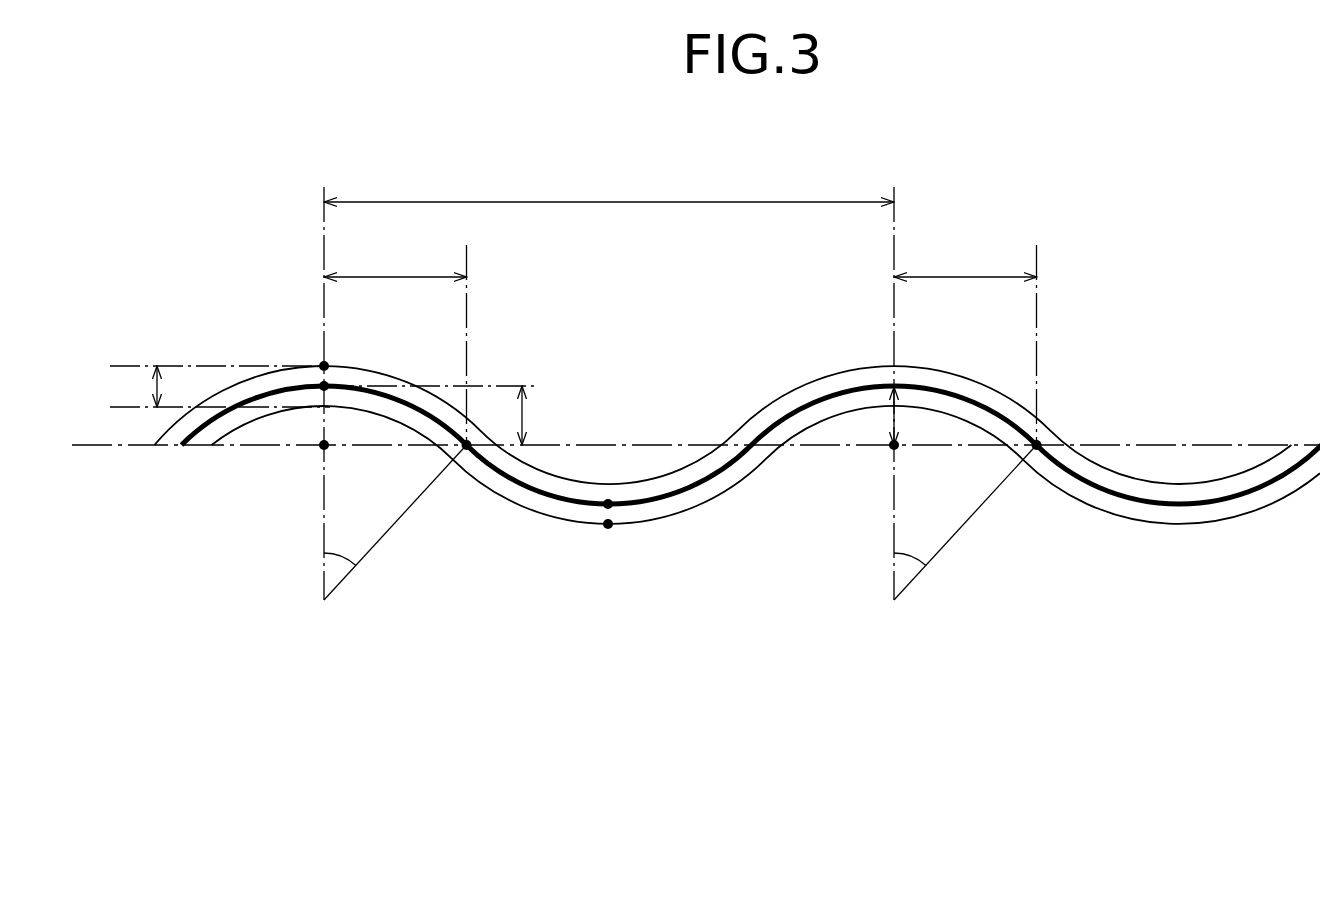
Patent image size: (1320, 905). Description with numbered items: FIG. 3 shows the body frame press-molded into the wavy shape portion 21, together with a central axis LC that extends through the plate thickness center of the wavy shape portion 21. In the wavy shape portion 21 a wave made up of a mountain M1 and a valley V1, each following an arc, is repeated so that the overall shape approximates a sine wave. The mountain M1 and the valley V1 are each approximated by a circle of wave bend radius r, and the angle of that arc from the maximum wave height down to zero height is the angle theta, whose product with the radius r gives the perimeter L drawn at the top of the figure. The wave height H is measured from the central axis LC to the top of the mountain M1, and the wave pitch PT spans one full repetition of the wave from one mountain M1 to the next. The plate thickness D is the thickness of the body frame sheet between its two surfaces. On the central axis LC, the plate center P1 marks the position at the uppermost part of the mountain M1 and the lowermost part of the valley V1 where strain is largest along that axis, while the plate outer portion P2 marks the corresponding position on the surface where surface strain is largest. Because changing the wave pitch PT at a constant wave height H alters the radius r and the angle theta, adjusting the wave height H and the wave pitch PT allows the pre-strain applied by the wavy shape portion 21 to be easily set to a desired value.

The wavy shape portion 21 is at (737, 336).
The mountain M1 is at (310, 360).
The valley V1 is at (596, 540).
The plate center P1 is at (328, 383).
The plate outer portion P2 is at (327, 363).
The central axis LC is at (408, 403).
The wave pitch PT is at (609, 189).
The perimeter L is at (680, 263).
The plate thickness D is at (220, 386).
The wave height H is at (609, 415).
The wave bend radius r is at (680, 522).